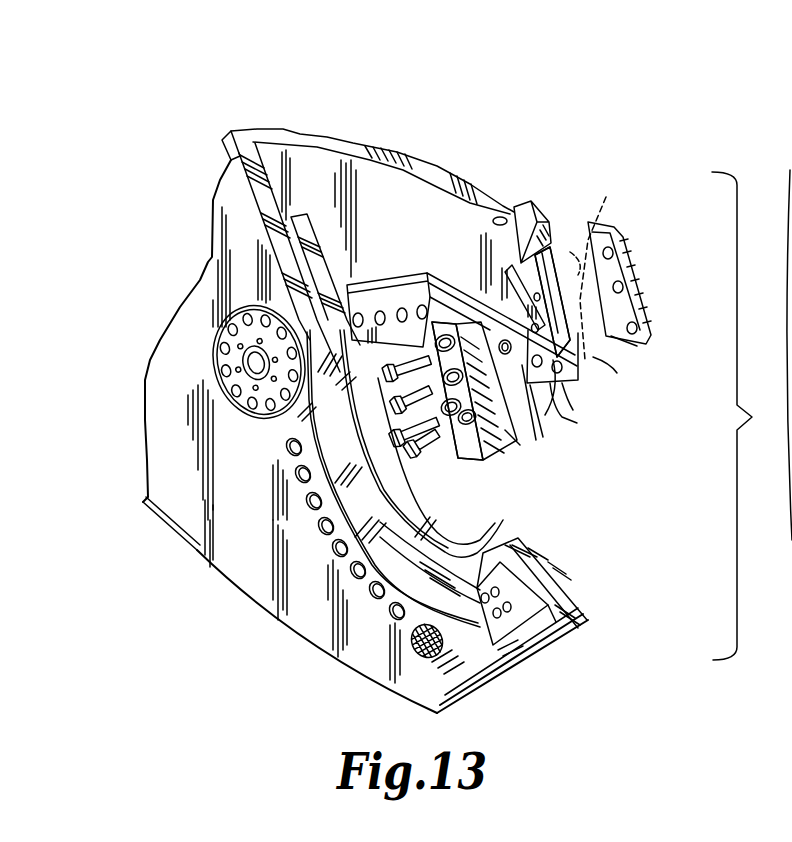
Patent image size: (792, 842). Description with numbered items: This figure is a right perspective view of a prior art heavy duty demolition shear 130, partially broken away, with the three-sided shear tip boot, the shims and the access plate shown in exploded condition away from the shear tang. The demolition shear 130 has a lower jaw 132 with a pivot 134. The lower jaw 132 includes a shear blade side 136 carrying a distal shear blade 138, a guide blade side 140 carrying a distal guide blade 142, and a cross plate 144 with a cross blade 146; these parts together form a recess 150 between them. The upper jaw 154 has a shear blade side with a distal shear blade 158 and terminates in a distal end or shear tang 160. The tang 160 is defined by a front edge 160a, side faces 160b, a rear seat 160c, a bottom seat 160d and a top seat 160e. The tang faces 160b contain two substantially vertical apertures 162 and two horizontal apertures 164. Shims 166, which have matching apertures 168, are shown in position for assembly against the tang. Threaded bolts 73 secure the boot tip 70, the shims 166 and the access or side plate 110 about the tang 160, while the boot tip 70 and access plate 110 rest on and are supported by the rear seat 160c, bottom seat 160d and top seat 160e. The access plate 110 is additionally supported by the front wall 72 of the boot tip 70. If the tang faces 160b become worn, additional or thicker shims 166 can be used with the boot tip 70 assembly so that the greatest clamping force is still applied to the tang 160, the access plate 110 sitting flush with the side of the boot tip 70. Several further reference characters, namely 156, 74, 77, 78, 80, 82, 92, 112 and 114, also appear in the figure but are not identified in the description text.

The demolition shear 130 is at (358, 124).
The lower jaw 132 is at (288, 620).
The pivot 134 is at (242, 342).
The shear blade side 136 is at (390, 600).
The distal shear blade 138 is at (490, 565).
The guide blade side 140 is at (520, 552).
The distal guide blade 142 is at (537, 590).
The cross plate 144 is at (552, 632).
The cross blade 146 is at (543, 633).
The recess 150 is at (485, 582).
The upper jaw 154 is at (500, 222).
The block 156 is at (447, 310).
The distal shear blade 158 is at (510, 325).
The shear tang 160 is at (605, 374).
The front edge 160a is at (552, 302).
The side faces 160b is at (560, 392).
The rear seat 160c is at (490, 312).
The bottom seat 160d is at (563, 430).
The top seat 160e is at (598, 350).
The substantially vertical apertures 162 is at (547, 280).
The horizontal apertures 164 is at (563, 360).
The shims 166 is at (620, 186).
The matching apertures 168 is at (622, 240).
The front wall 72 is at (630, 256).
The access plate 110 is at (634, 268).
The hole 112 is at (640, 288).
The hole 114 is at (560, 295).
The boot tip 70 is at (486, 408).
The frame 74 is at (395, 330).
The manifold body 77 is at (457, 391).
The ports 78 is at (445, 432).
The threaded bolts 73 is at (403, 448).
The passage 80 is at (437, 340).
The bore 82 is at (510, 428).
The fitting 92 is at (513, 437).